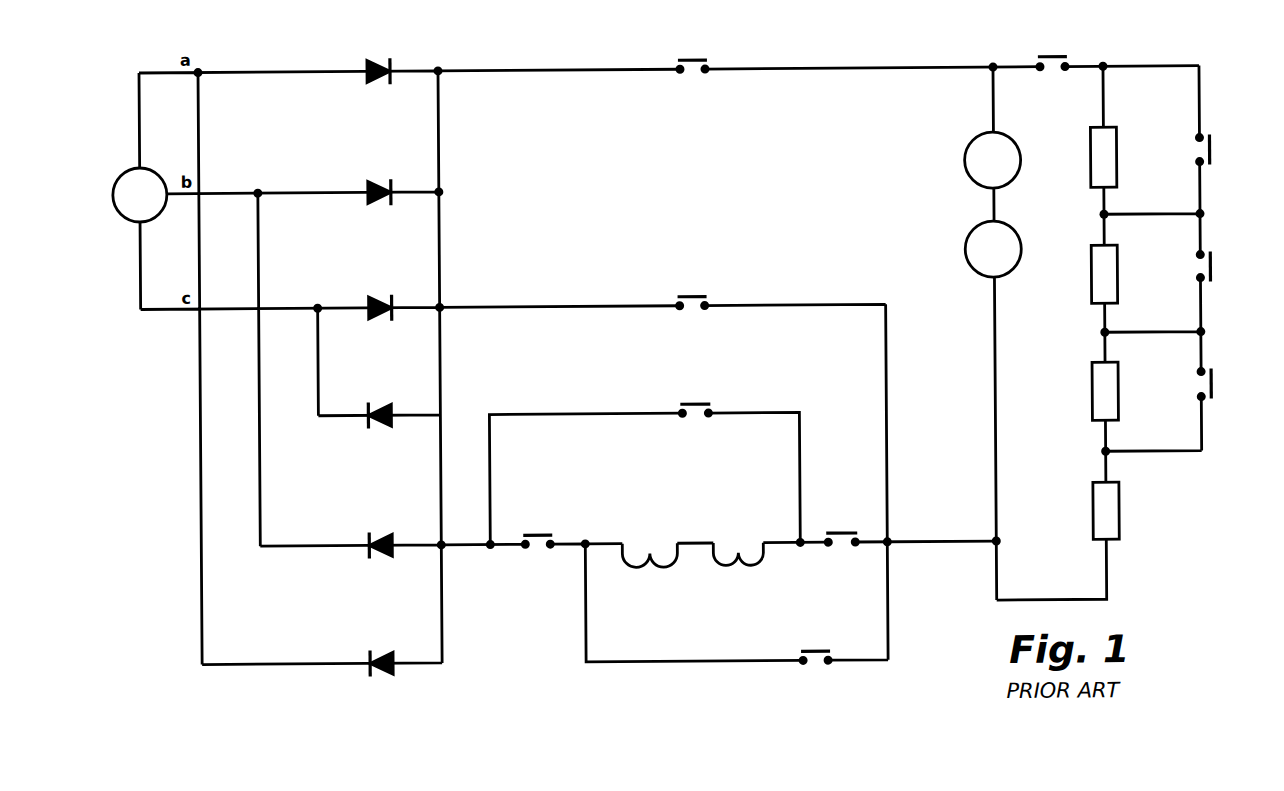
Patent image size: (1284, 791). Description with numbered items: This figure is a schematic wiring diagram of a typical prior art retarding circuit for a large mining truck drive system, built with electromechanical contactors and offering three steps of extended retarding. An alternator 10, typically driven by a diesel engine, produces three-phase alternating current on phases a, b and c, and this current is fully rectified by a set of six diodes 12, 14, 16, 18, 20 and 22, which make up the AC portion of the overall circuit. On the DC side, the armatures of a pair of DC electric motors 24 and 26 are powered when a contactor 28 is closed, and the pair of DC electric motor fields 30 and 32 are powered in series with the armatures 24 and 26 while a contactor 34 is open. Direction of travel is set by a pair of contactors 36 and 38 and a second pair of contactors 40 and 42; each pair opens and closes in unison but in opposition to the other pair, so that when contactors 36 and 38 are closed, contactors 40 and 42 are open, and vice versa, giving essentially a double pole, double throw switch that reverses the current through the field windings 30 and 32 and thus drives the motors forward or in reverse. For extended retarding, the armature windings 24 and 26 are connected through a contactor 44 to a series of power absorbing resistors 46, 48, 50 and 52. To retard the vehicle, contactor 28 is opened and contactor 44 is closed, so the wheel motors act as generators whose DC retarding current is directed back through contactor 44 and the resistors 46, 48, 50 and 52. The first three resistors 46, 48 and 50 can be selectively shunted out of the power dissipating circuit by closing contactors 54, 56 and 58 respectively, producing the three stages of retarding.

The alternator 10 is at (130, 170).
The diode 12 is at (374, 57).
The diode 14 is at (374, 178).
The diode 16 is at (374, 295).
The diode 18 is at (374, 407).
The diode 20 is at (374, 538).
The diode 22 is at (372, 656).
The DC electric motor armature 24 is at (1011, 146).
The DC electric motor armature 26 is at (1017, 240).
The contactor 28 is at (692, 63).
The DC electric motor field 30 is at (732, 548).
The DC electric motor field 32 is at (645, 548).
The contactor 34 is at (688, 299).
The contactor 36 is at (832, 532).
The contactor 38 is at (528, 537).
The contactor 40 is at (810, 655).
The contactor 42 is at (692, 407).
The contactor 44 is at (1052, 62).
The power absorbing resistor 46 is at (1116, 163).
The power absorbing resistor 48 is at (1116, 266).
The power absorbing resistor 50 is at (1116, 384).
The power absorbing resistor 52 is at (1116, 502).
The contactor 54 is at (1211, 158).
The contactor 56 is at (1211, 275).
The contactor 58 is at (1211, 392).